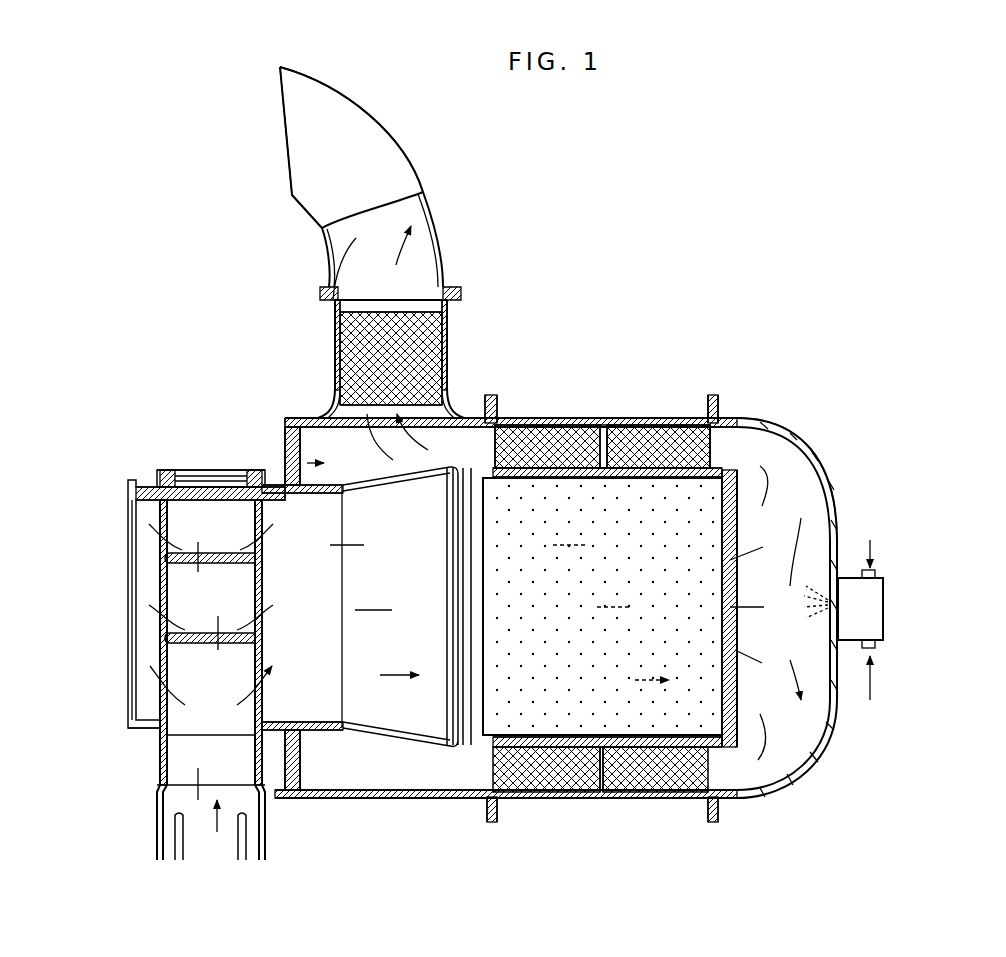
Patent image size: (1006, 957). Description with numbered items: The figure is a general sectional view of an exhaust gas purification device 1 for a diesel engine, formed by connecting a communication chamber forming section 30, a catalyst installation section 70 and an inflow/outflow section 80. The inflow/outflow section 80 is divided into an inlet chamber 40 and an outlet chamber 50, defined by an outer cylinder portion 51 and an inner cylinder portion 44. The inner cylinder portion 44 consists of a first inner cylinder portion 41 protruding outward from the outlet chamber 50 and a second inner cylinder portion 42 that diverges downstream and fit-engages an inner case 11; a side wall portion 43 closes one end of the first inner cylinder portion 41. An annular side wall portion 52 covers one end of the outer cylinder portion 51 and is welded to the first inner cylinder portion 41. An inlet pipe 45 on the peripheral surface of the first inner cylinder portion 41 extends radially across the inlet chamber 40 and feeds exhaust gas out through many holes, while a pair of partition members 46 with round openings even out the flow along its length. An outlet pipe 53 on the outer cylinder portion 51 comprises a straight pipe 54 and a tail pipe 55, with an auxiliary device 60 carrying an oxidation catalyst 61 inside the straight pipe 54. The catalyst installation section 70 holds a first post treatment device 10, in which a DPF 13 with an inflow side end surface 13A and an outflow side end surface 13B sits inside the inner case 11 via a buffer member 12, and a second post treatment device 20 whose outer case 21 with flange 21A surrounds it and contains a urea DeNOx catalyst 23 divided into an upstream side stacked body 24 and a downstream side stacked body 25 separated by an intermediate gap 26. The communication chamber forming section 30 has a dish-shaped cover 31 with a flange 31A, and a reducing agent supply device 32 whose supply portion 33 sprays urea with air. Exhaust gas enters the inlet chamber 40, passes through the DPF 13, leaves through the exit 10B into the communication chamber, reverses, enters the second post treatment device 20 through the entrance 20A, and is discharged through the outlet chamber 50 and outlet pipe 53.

The exhaust gas purification device 1 is at (602, 183).
The first post treatment device 10 is at (658, 725).
The exit 10B is at (734, 698).
The inner case 11 is at (480, 748).
The buffer member 12 is at (533, 746).
The DPF 13 is at (560, 726).
The inflow side end surface 13A is at (485, 697).
The outflow side end surface 13B is at (720, 670).
The second post treatment device 20 is at (582, 776).
The entrance 20A is at (708, 440).
The outer case 21 is at (535, 417).
The flange 21A is at (714, 412).
The urea DeNOx catalyst 23 is at (697, 335).
The upstream side stacked body 24 is at (633, 424).
The downstream side stacked body 25 is at (574, 424).
The intermediate gap 26 is at (604, 430).
The communication chamber forming section 30 is at (806, 716).
The dish-shaped cover 31 is at (836, 478).
The flange 31A is at (724, 412).
The reducing agent supply device 32 is at (918, 598).
The supply portion 33 is at (883, 622).
The inlet chamber 40 is at (287, 511).
The first inner cylinder portion 41 is at (270, 730).
The second inner cylinder portion 42 is at (360, 748).
The side wall portion 43 is at (137, 702).
The inner cylinder portion 44 is at (357, 845).
The inlet pipe 45 is at (162, 762).
The partition members 46 is at (175, 573).
The outlet chamber 50 is at (286, 437).
The outer cylinder portion 51 is at (313, 418).
The side wall portion 52 is at (297, 443).
The outlet pipe 53 is at (490, 198).
The straight pipe 54 is at (462, 295).
The tail pipe 55 is at (433, 199).
The auxiliary device 60 is at (430, 356).
The oxidation catalyst 61 is at (437, 376).
The catalyst installation section 70 is at (700, 824).
The inflow/outflow section 80 is at (148, 327).